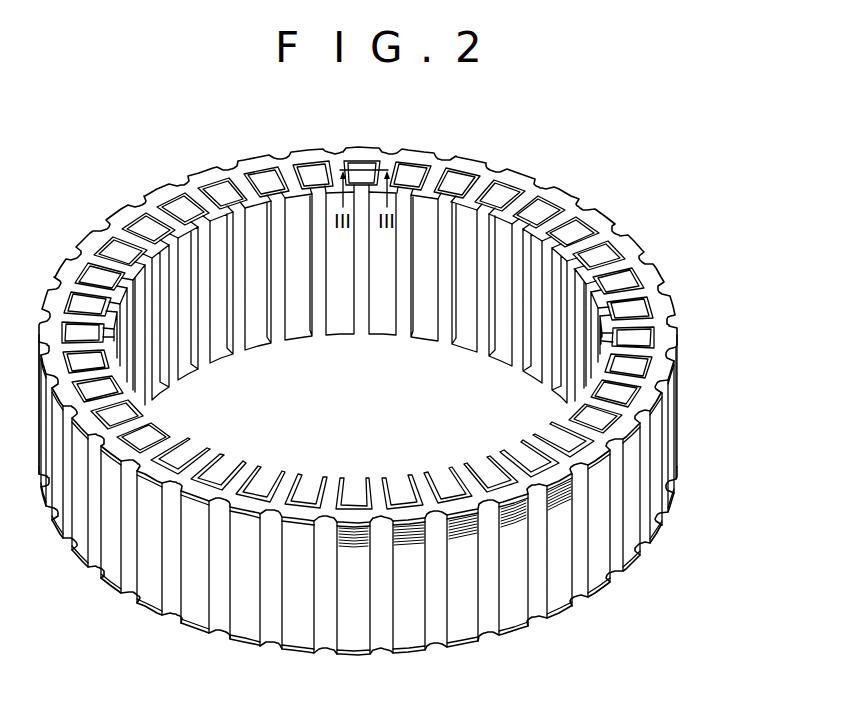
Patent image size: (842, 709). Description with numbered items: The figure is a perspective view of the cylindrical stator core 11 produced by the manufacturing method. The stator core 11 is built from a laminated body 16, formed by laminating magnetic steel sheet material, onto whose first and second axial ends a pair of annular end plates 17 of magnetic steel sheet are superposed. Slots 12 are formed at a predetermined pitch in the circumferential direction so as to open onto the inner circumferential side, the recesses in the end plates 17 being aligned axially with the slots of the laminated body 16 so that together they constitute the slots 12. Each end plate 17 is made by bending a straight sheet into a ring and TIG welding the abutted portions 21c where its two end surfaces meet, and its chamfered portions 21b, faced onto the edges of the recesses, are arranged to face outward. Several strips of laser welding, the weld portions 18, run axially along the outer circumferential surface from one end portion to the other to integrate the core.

The stator core 11 is at (66, 175).
The slots 12 is at (630, 283).
The laminated body 16 is at (676, 441).
The end plates 17 is at (681, 340).
The weld portions 18 is at (108, 229).
The chamfered portions 21b is at (590, 227).
The abutted portions 21c is at (218, 632).